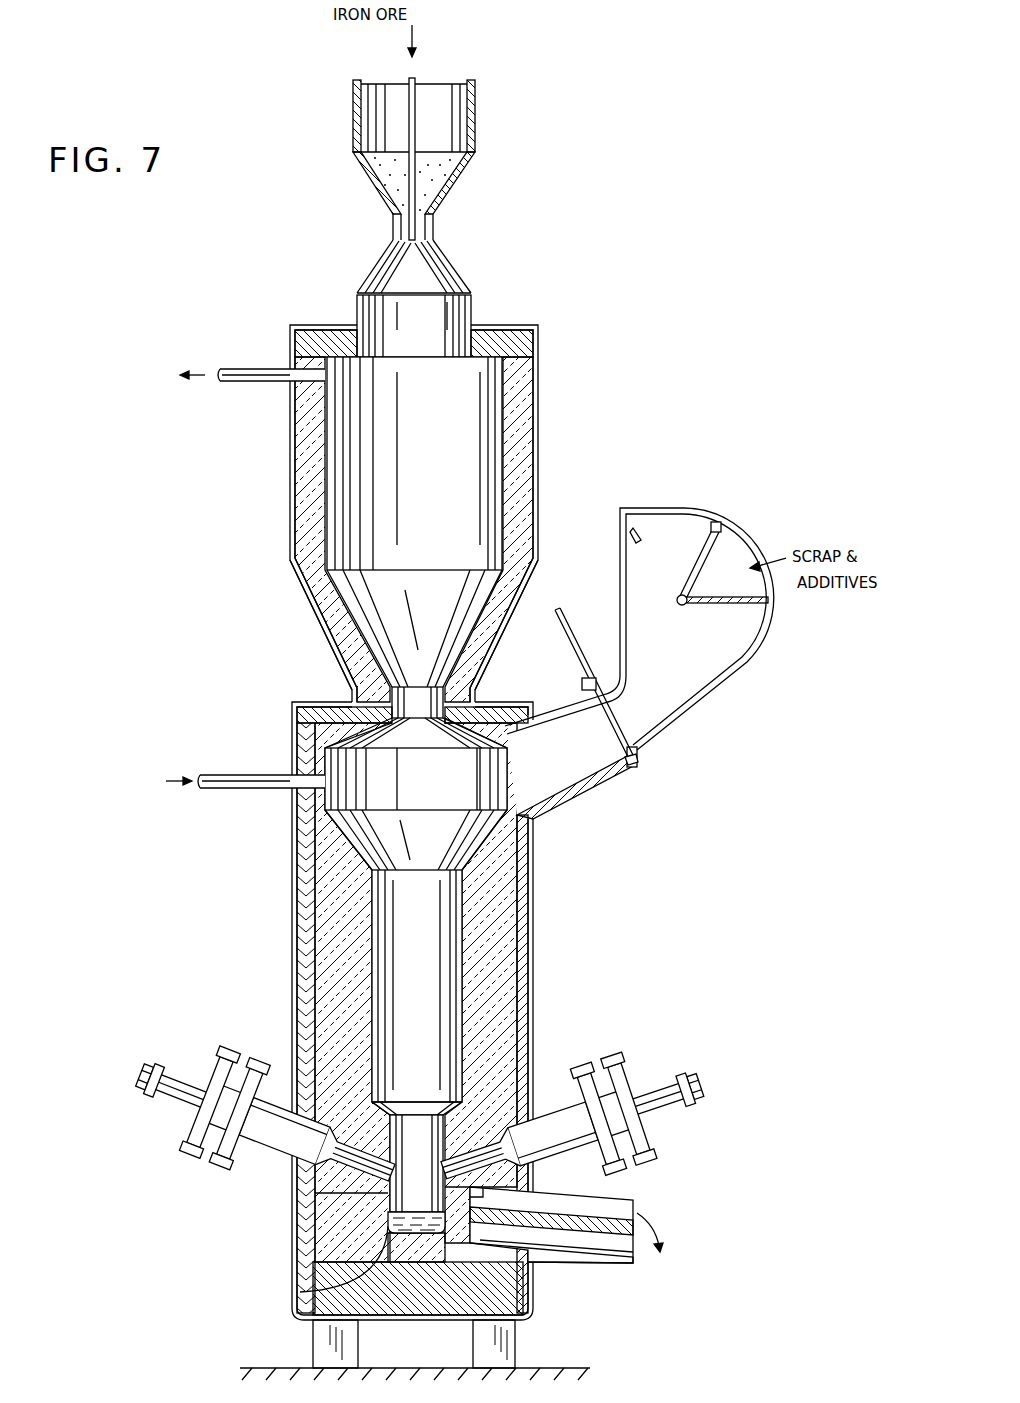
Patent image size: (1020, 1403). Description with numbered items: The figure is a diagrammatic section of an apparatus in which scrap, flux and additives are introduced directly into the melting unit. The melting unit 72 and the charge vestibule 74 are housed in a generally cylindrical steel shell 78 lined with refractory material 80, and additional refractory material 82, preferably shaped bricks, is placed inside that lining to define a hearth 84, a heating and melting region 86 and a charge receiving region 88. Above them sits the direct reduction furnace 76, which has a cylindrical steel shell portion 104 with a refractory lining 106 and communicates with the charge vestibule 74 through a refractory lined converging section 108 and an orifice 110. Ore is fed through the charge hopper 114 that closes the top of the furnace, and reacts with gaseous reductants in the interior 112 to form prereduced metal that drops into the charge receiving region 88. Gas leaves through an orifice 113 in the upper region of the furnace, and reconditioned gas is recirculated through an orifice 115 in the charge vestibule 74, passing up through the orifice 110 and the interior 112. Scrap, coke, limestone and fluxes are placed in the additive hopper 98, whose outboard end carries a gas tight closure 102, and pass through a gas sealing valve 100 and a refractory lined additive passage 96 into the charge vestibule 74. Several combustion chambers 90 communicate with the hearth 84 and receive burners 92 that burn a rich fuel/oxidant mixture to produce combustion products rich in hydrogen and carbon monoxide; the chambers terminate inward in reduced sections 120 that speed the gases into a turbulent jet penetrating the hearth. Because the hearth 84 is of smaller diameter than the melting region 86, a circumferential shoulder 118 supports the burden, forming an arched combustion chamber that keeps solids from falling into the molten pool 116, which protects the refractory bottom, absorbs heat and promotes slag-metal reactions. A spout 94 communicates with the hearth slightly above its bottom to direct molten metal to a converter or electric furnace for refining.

The melting unit 72 is at (427, 1041).
The charge vestibule 74 is at (427, 1041).
The direct reduction furnace 76 is at (359, 479).
The steel shell 78 is at (292, 916).
The refractory material 80 is at (305, 950).
The additional refractory material 82 is at (330, 980).
The hearth 84 is at (434, 1169).
The heating and melting region 86 is at (436, 960).
The charge receiving region 88 is at (434, 794).
The combustion chambers 90 is at (560, 1130).
The burners 92 is at (682, 1116).
The spout 94 is at (636, 1202).
The additive passage 96 is at (590, 790).
The additive hopper 98 is at (695, 698).
The gas sealing valve 100 is at (575, 653).
The gas tight closure 102 is at (722, 546).
The steel shell portion 104 is at (291, 474).
The refractory lining 106 is at (308, 505).
The converging section 108 is at (305, 603).
The orifice 110 is at (386, 690).
The interior of the furnace 112 is at (452, 483).
The gas egress orifice 113 is at (283, 387).
The charge hopper 114 is at (453, 282).
The gas recirculation orifice 115 is at (288, 789).
The pool of hot metal 116 is at (330, 1283).
The circumferential shoulder 118 is at (374, 1106).
The reduced sections 120 is at (318, 1222).